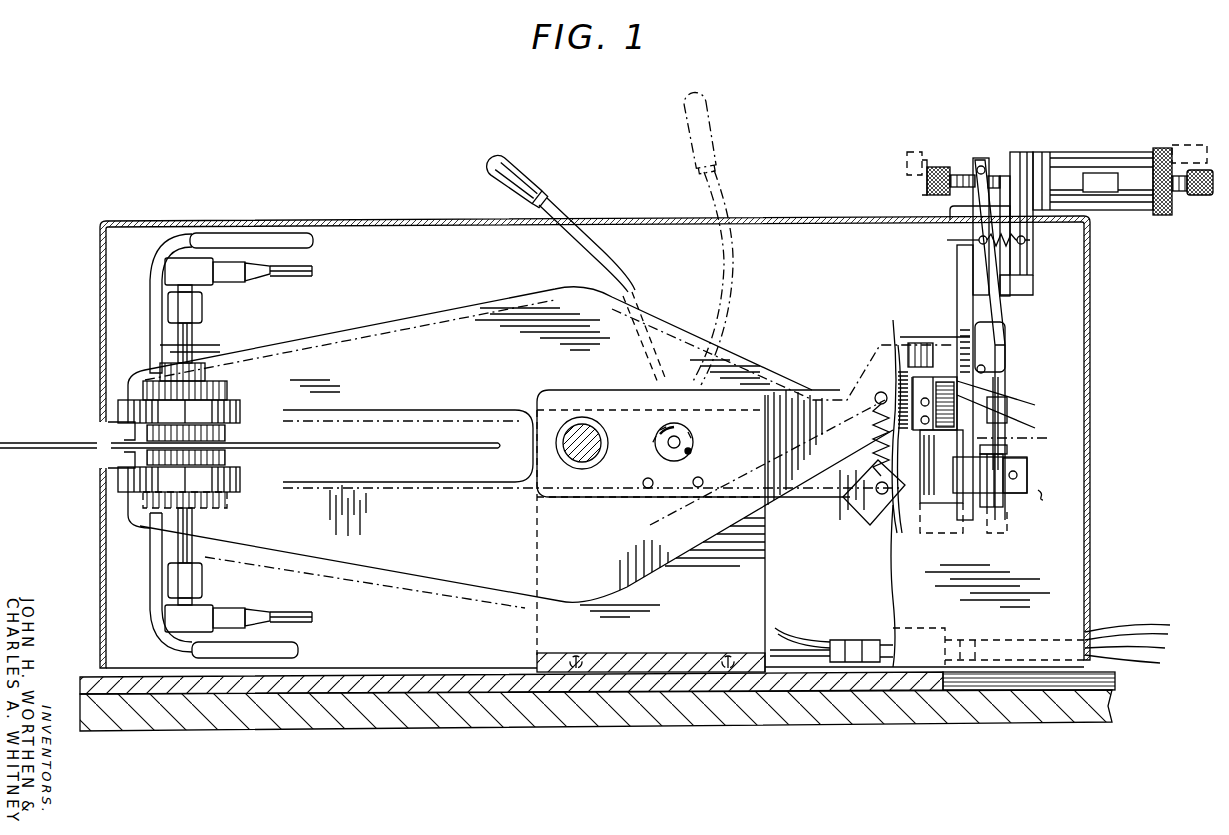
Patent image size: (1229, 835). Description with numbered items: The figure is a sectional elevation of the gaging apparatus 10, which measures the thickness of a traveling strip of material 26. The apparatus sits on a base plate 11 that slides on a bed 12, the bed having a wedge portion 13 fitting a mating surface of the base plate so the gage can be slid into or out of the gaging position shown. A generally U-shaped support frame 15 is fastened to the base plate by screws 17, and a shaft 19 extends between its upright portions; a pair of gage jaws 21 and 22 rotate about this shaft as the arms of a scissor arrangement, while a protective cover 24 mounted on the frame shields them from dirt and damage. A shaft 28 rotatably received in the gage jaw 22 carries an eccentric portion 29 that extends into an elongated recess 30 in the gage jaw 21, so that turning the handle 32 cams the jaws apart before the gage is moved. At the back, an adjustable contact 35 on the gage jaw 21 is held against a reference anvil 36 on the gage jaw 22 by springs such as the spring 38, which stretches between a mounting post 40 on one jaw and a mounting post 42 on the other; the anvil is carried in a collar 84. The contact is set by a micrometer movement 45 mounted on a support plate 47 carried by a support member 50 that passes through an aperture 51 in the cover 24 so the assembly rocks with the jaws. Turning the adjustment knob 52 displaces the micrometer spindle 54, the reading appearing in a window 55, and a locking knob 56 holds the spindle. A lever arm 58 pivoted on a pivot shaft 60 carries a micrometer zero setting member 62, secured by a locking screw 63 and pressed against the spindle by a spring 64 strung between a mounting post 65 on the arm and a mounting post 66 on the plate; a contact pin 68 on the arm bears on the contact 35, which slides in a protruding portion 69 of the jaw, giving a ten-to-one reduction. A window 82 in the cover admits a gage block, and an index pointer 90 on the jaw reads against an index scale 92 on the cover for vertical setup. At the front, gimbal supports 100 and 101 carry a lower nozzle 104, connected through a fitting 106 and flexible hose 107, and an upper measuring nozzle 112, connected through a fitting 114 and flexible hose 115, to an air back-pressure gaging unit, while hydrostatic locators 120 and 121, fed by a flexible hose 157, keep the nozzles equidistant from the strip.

The gaging apparatus 10 is at (368, 188).
The base plate 11 is at (852, 685).
The bed 12 is at (942, 700).
The wedge portion 13 is at (1005, 685).
The support frame 15 is at (768, 590).
The screws 17 is at (583, 653).
The shaft 19 is at (575, 457).
The gage jaw 21 is at (447, 592).
The gage jaw 22 is at (430, 300).
The protective cover 24 is at (822, 218).
The strip of material 26 is at (40, 448).
The shaft 28 is at (658, 437).
The eccentric portion 29 is at (692, 440).
The elongated recess 30 is at (697, 449).
The handle 32 is at (688, 153).
The adjustable contact 35 is at (1025, 440).
The reference anvil 36 is at (1025, 462).
The spring 38 is at (878, 437).
The mounting post 40 is at (875, 394).
The mounting post 42 is at (878, 492).
The micrometer movement 45 is at (1125, 218).
The support plate 47 is at (1030, 156).
The support member 50 is at (956, 320).
The aperture 51 is at (958, 212).
The adjustment knob 52 is at (1168, 150).
The micrometer spindle 54 is at (1004, 175).
The window 55 is at (1103, 170).
The locking knob 56 is at (1196, 195).
The lever arm 58 is at (965, 277).
The pivot shaft 60 is at (986, 370).
The micrometer zero setting member 62 is at (956, 168).
The locking screw 63 is at (985, 166).
The spring 64 is at (978, 238).
The mounting post 65 is at (978, 242).
The mounting post 66 is at (1026, 242).
The contact pin 68 is at (1007, 380).
The protruding portion 69 is at (1010, 420).
The window 82 is at (1045, 497).
The collar 84 is at (1015, 496).
The index pointer 90 is at (935, 412).
The index scale 92 is at (905, 374).
The gimbal support 100 is at (244, 488).
The gimbal support 101 is at (247, 411).
The nozzle 104 is at (200, 548).
The fitting 106 is at (217, 605).
The flexible hose 107 is at (290, 613).
The measuring nozzle 112 is at (193, 328).
The fitting 114 is at (207, 294).
The flexible hose 115 is at (300, 270).
The hydrostatic locator 120 is at (228, 458).
The hydrostatic locator 121 is at (228, 432).
The flexible hose 157 is at (157, 335).